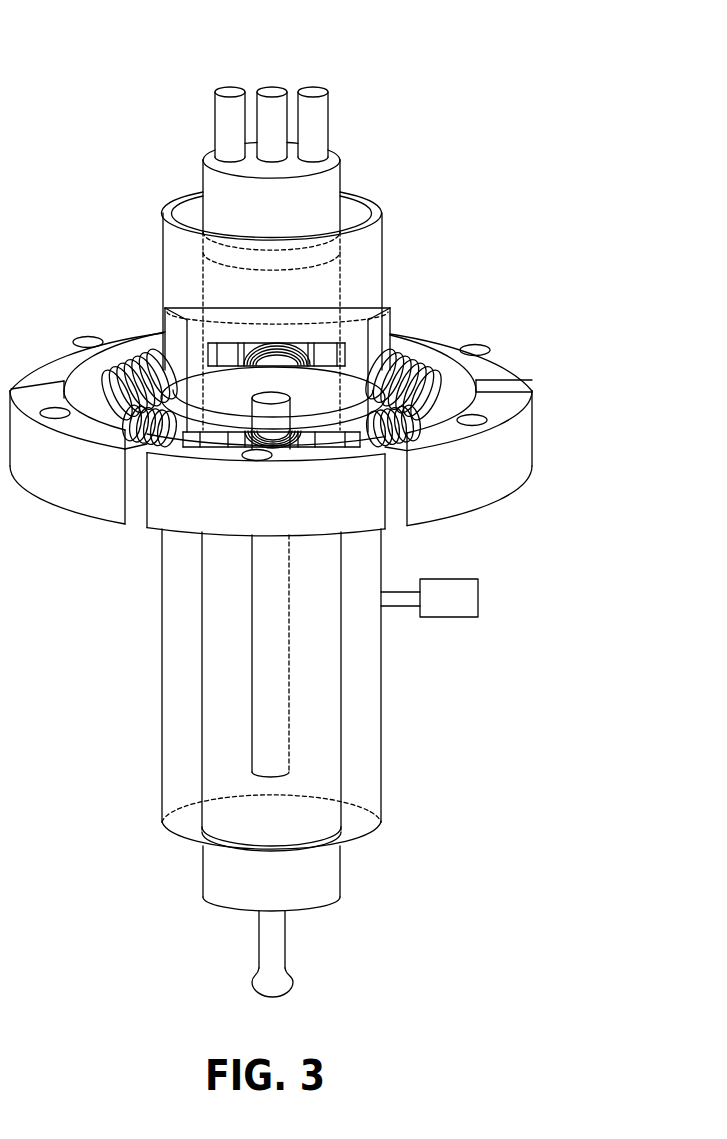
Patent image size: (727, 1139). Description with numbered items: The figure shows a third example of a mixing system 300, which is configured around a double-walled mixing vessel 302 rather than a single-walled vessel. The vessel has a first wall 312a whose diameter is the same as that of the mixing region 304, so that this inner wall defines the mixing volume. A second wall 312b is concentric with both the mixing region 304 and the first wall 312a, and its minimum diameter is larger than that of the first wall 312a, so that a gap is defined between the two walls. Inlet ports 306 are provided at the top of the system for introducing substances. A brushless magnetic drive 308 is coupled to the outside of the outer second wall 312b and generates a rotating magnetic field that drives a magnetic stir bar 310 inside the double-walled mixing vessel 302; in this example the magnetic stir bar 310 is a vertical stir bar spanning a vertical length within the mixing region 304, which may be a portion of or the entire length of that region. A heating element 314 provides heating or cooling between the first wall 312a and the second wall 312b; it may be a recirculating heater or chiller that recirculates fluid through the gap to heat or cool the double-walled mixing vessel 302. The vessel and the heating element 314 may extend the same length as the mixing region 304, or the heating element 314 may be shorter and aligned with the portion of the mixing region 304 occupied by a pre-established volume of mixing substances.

The mixing system 300 is at (112, 49).
The double-walled mixing vessel 302 is at (325, 322).
The mixing region 304 is at (238, 583).
The inlet ports 306 is at (313, 92).
The brushless magnetic drive 308 is at (518, 427).
The magnetic stir bar 310 is at (252, 657).
The first wall 312a is at (203, 262).
The second wall 312b is at (163, 281).
The heating element 314 is at (395, 607).